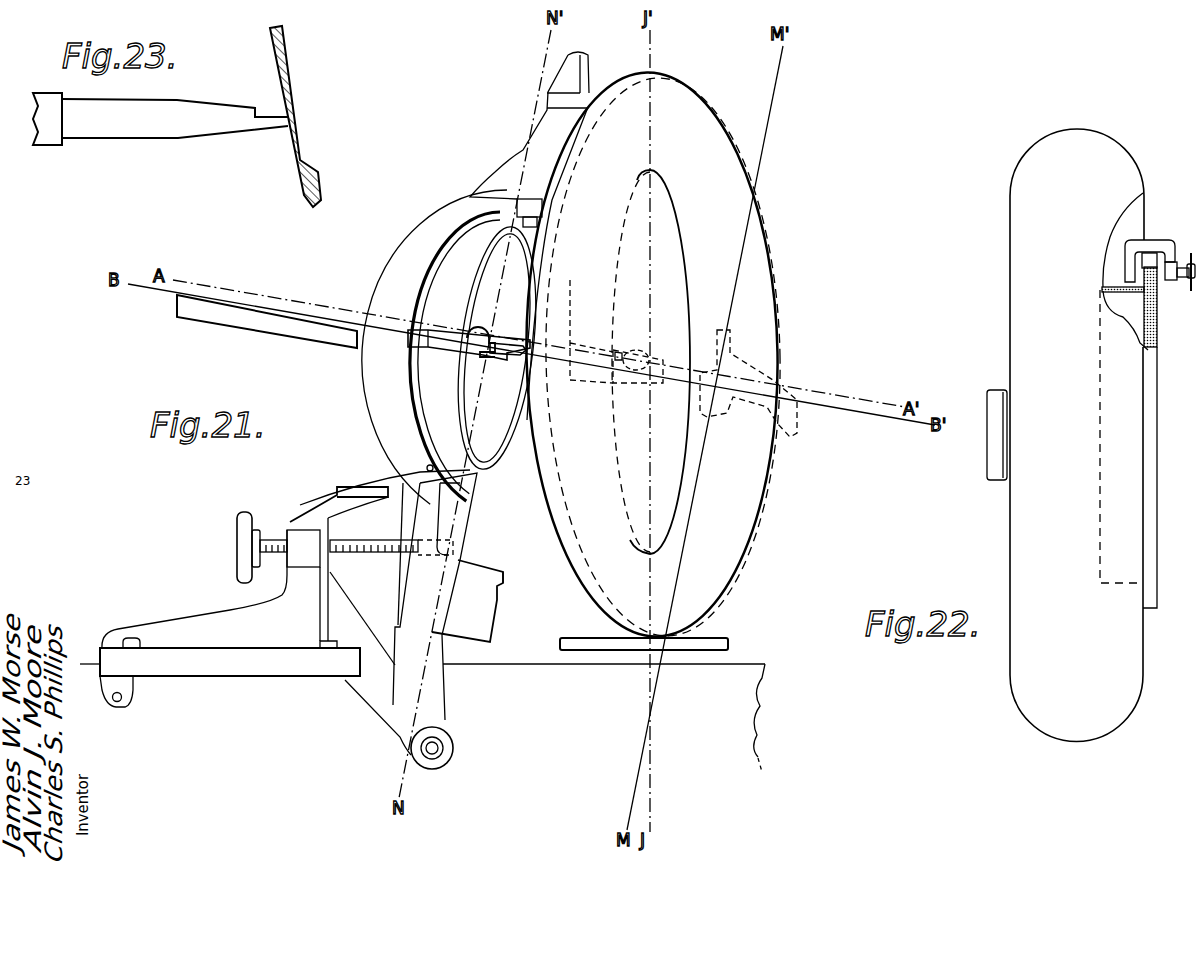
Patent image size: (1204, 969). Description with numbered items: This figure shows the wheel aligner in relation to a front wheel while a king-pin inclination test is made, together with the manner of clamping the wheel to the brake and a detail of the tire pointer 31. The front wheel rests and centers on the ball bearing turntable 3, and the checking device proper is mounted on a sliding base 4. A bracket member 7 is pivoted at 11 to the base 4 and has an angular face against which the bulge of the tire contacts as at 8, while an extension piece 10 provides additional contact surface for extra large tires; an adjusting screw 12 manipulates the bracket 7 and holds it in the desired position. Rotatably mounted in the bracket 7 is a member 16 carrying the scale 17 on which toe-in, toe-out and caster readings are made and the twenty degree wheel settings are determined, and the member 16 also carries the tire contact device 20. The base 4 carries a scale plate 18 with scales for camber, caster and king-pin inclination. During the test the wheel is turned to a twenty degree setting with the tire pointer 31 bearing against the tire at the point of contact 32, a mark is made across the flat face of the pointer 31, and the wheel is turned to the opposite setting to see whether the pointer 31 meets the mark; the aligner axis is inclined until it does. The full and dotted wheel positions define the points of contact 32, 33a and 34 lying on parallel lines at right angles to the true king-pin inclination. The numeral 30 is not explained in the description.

In FIG. 21, the ball bearing turntable 3 is at (713, 645).
In FIG. 21, the sliding base 4 is at (258, 660).
In FIG. 21, the bracket member 7 is at (467, 503).
In FIG. 21, the tire bulge contact 8 is at (498, 600).
In FIG. 21, the extension piece 10 is at (590, 74).
In FIG. 21, the pivot 11 is at (443, 746).
In FIG. 21, the adjusting screw 12 is at (366, 542).
In FIG. 21, the rotatable member 16 is at (438, 394).
In FIG. 21, the scale 17 is at (293, 330).
In FIG. 21, the scale plate 18 is at (290, 522).
In FIG. 21, the tire contact device 20 is at (410, 381).
In FIG. 21, the lug 30 is at (504, 576).
In FIG. 23, the tire pointer 31 is at (150, 124).
In FIG. 21, the tire pointer 31 is at (511, 355).
In FIG. 21, the point of contact 32 is at (527, 346).
In FIG. 21, the point of contact 33a is at (680, 376).
In FIG. 21, the point of contact 34 is at (618, 357).